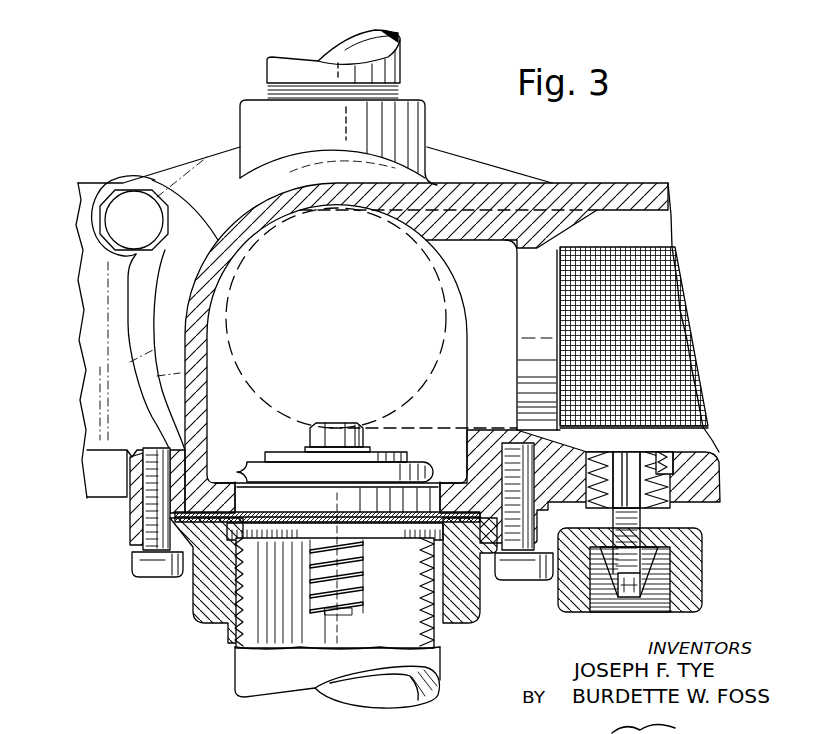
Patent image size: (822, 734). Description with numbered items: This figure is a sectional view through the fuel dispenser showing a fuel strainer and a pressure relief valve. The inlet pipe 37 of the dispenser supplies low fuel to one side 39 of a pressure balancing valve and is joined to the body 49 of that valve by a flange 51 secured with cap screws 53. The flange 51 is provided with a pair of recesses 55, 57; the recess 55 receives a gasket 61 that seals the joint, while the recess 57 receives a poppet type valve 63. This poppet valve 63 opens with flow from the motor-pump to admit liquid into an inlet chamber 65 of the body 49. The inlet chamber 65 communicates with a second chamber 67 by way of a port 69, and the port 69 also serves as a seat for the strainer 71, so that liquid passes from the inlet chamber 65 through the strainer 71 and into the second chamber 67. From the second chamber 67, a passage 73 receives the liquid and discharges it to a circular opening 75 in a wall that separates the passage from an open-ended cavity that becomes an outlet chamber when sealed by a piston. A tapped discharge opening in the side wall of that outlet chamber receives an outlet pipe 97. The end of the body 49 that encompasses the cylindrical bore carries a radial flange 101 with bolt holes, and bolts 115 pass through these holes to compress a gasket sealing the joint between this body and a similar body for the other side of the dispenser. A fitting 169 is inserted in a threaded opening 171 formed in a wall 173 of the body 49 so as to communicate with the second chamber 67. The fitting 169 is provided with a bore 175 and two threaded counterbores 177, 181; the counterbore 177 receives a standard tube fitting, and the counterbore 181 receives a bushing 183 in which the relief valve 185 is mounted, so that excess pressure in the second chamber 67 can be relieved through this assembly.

The inlet pipe 37 is at (253, 656).
The side of pressure balancing valve 39 is at (581, 172).
The body 49 is at (154, 337).
The flange 51 is at (207, 595).
The cap screws 53 is at (150, 568).
The recess 55 is at (210, 512).
The recess 57 is at (327, 517).
The gasket 61 is at (455, 502).
The poppet type valve 63 is at (282, 451).
The inlet chamber 65 is at (303, 272).
The second chamber 67 is at (658, 226).
The port 69 is at (540, 424).
The strainer 71 is at (642, 260).
The passage 73 is at (485, 232).
The circular opening 75 is at (427, 258).
The outlet pipe 97 is at (400, 42).
The radial flange 101 is at (208, 175).
The bolts 115 is at (132, 210).
The fitting 169 is at (702, 547).
The threaded opening 171 is at (670, 477).
The wall 173 is at (703, 487).
The bore 175 is at (629, 446).
The counterbore 177 is at (667, 608).
The counterbore 181 is at (640, 538).
The bushing 183 is at (620, 549).
The relief valve 185 is at (657, 579).